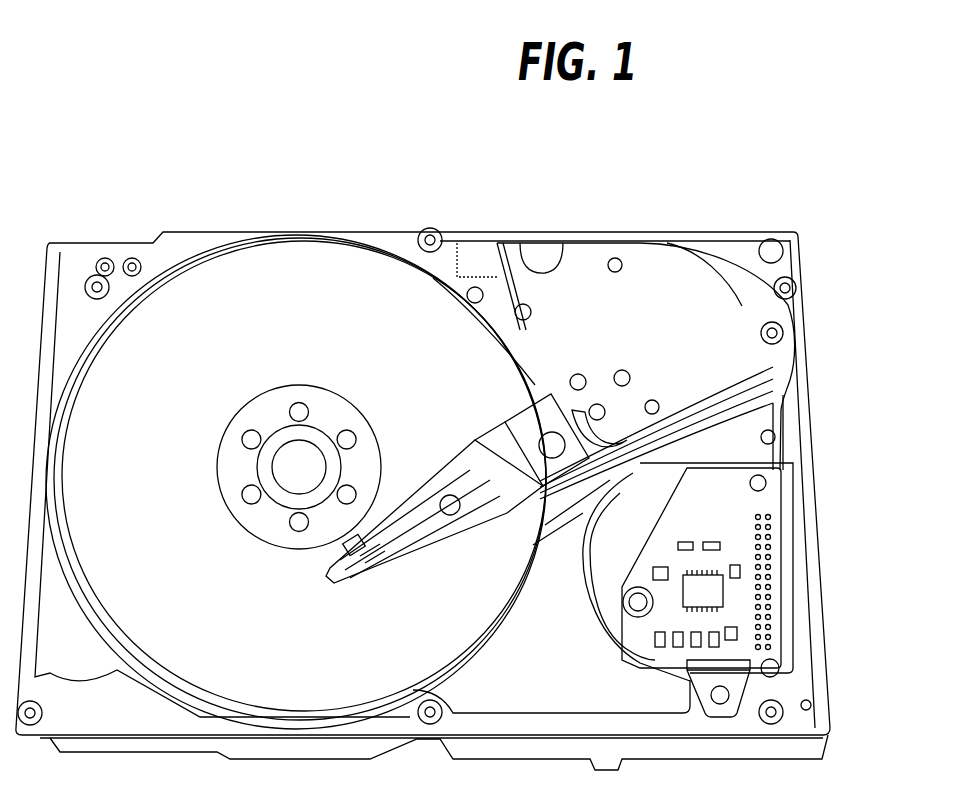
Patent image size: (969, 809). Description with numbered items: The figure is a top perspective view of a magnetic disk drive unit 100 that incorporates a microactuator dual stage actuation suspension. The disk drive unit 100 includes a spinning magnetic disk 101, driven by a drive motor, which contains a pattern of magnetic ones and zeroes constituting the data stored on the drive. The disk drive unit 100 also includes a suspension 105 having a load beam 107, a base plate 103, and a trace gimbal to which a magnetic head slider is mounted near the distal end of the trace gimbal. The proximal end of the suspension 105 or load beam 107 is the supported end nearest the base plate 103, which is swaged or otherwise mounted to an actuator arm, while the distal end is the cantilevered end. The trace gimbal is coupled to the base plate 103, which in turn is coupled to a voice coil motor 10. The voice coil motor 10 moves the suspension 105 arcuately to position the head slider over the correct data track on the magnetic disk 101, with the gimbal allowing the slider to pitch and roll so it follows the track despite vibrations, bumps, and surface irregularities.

The magnetic disk drive unit 100 is at (307, 193).
The spinning magnetic disk 101 is at (247, 290).
The voice coil motor 10 is at (635, 330).
The base plate 103 is at (568, 477).
The suspension 105 is at (370, 592).
The load beam 107 is at (417, 497).